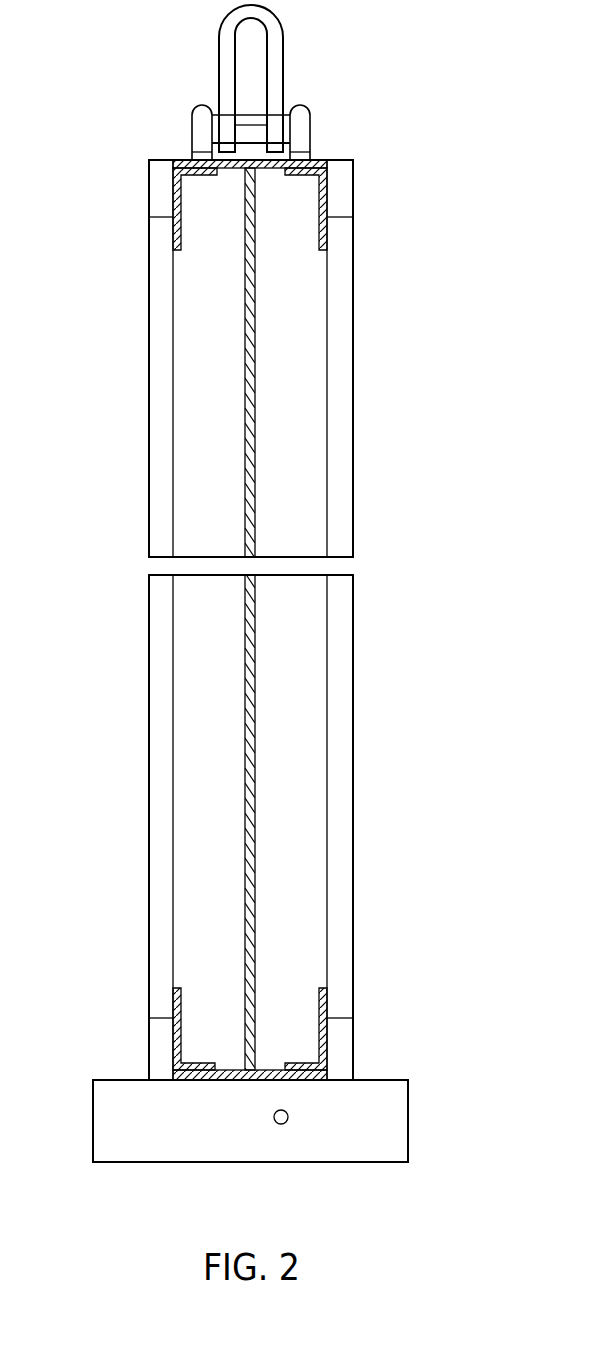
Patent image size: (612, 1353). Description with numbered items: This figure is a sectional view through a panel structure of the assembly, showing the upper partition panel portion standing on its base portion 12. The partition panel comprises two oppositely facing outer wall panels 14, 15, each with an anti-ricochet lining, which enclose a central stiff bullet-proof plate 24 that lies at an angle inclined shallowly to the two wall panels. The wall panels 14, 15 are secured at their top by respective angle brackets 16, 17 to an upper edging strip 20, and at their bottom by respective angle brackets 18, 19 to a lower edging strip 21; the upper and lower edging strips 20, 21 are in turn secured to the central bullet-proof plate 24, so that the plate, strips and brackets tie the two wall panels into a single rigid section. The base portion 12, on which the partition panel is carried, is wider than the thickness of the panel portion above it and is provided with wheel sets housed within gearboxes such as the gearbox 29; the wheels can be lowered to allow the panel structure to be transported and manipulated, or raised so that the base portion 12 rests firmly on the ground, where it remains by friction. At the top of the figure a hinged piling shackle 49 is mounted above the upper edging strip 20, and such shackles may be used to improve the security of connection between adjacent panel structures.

The base portion 12 is at (408, 1130).
The outer wall panel 14 is at (162, 503).
The outer wall panel 15 is at (340, 397).
The angle bracket 16 is at (175, 205).
The angle bracket 17 is at (328, 203).
The angle bracket 18 is at (176, 1023).
The angle bracket 19 is at (326, 1050).
The upper edging strip 20 is at (192, 163).
The lower edging strip 21 is at (268, 1068).
The central stiff bullet-proof plate 24 is at (243, 363).
The gearbox 29 is at (287, 1122).
The shackle 49 is at (273, 80).